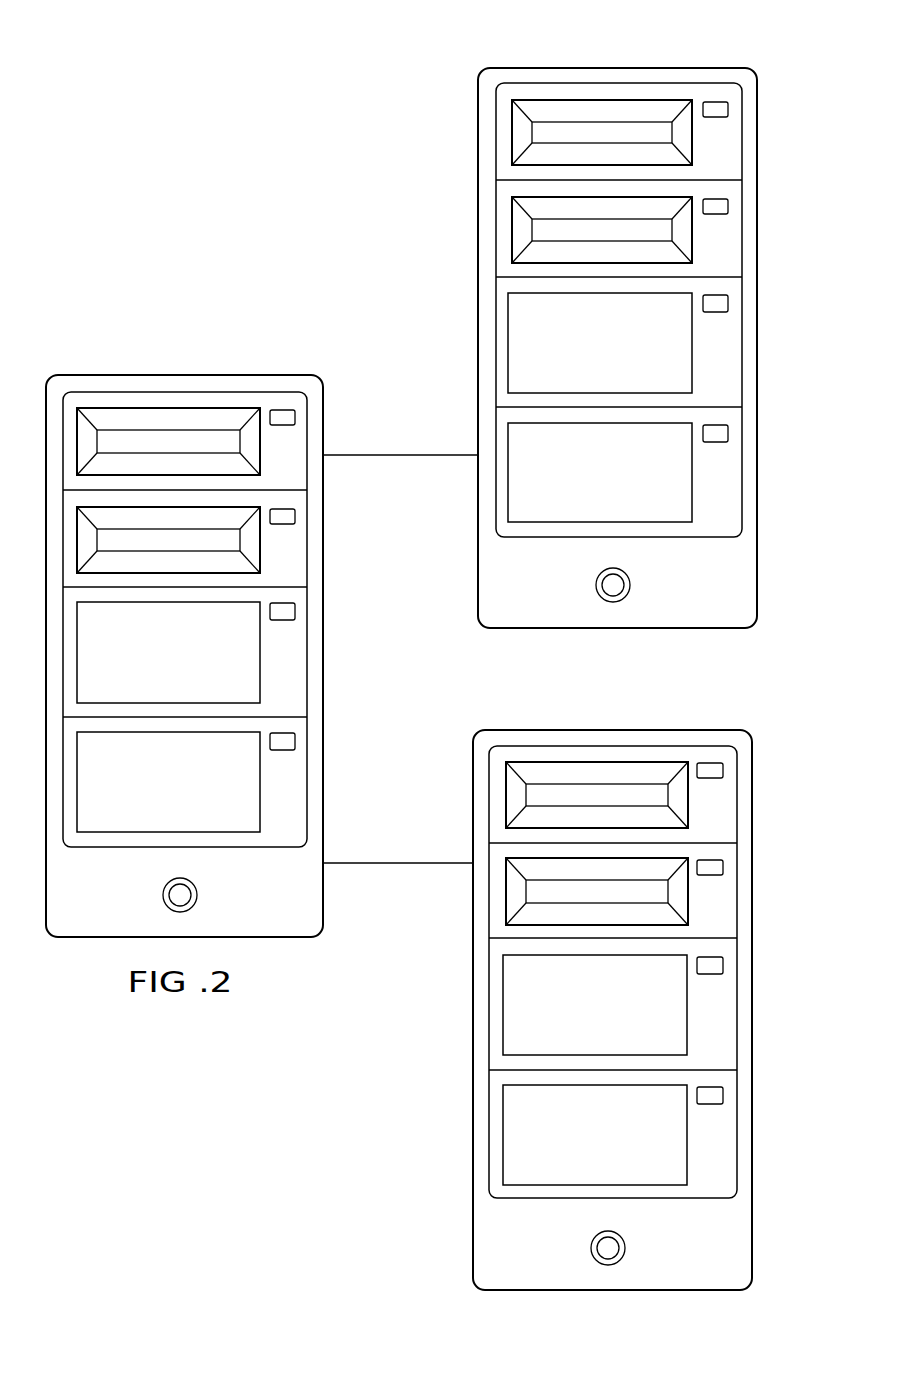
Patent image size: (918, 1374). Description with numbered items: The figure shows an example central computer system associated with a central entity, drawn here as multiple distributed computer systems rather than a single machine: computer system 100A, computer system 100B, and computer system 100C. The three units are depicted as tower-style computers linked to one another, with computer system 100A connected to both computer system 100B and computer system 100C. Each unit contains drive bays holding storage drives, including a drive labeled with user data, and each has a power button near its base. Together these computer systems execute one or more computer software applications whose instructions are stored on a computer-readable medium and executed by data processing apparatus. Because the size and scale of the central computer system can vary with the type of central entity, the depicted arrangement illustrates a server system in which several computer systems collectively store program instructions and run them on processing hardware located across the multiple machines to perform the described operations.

The computer system 100A is at (127, 372).
The computer system 100B is at (678, 66).
The computer system 100C is at (670, 728).